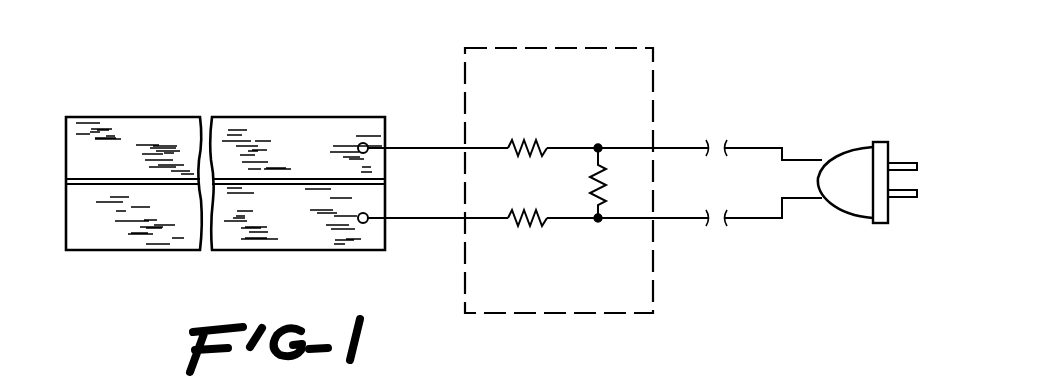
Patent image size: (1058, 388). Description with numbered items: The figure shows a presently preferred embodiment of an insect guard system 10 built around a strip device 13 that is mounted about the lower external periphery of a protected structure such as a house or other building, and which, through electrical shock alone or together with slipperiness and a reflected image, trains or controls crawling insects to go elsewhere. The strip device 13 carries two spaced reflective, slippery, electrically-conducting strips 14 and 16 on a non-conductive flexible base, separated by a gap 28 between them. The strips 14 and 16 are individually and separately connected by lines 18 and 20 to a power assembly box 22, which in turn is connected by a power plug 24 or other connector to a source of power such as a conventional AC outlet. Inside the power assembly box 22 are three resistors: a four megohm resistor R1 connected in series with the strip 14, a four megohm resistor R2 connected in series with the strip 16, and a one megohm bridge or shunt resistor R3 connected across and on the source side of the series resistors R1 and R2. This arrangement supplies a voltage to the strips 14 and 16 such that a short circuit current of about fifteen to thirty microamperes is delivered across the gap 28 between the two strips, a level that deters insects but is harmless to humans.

The insect guard system 10 is at (367, 64).
The strip device 13 is at (243, 117).
The electrically-conducting strip 14 is at (322, 135).
The electrically-conducting strip 16 is at (300, 236).
The line 18 is at (447, 144).
The line 20 is at (412, 222).
The power assembly box 22 is at (649, 52).
The power plug 24 is at (858, 150).
The gap 28 is at (97, 182).
The resistor R1 is at (527, 129).
The resistor R2 is at (527, 240).
The bridge or shunt resistor R3 is at (580, 183).